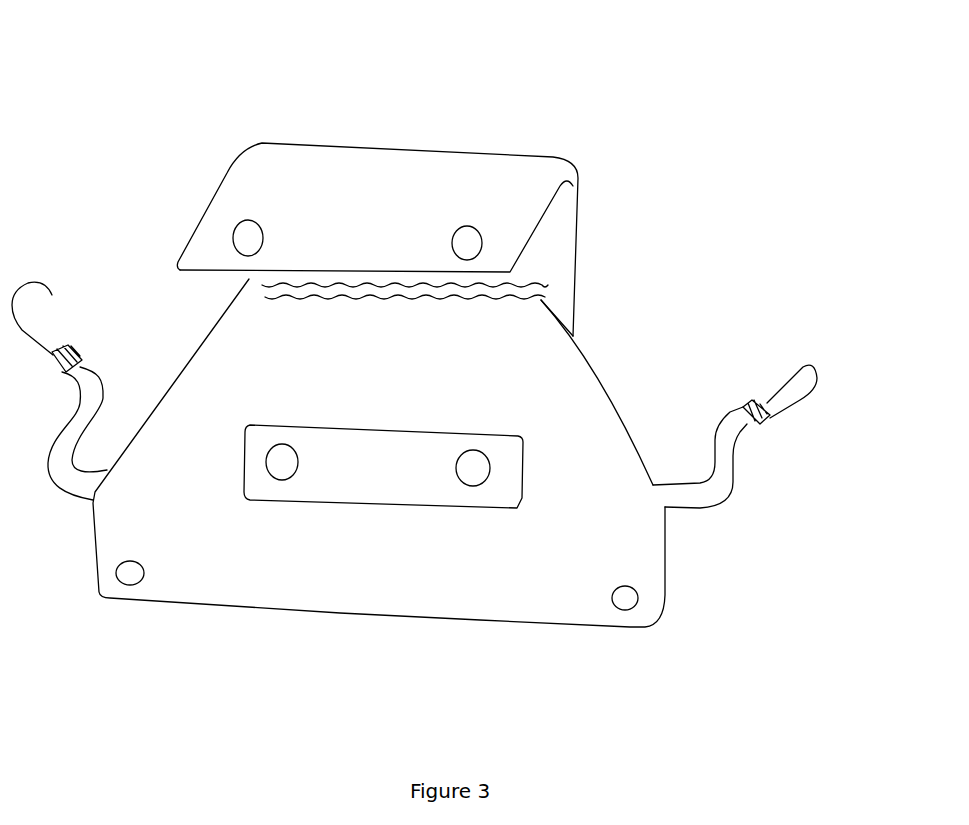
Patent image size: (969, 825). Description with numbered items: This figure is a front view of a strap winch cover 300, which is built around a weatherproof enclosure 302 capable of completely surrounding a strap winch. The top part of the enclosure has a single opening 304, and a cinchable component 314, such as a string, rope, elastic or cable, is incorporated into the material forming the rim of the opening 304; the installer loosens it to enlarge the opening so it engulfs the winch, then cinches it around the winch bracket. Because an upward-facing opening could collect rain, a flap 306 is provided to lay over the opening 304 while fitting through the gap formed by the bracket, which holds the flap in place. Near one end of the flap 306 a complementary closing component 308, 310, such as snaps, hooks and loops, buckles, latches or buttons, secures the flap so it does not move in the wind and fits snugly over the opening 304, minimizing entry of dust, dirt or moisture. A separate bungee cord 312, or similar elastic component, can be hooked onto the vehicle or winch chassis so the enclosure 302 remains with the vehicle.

The strap winch cover 300 is at (757, 87).
The weatherproof enclosure 302 is at (634, 554).
The single opening 304 is at (540, 288).
The flap 306 is at (391, 144).
The complementary closing component 308 is at (219, 220).
The complementary closing component 310 is at (245, 436).
The bungee cord 312 is at (743, 400).
The cinchable component 314 is at (258, 291).